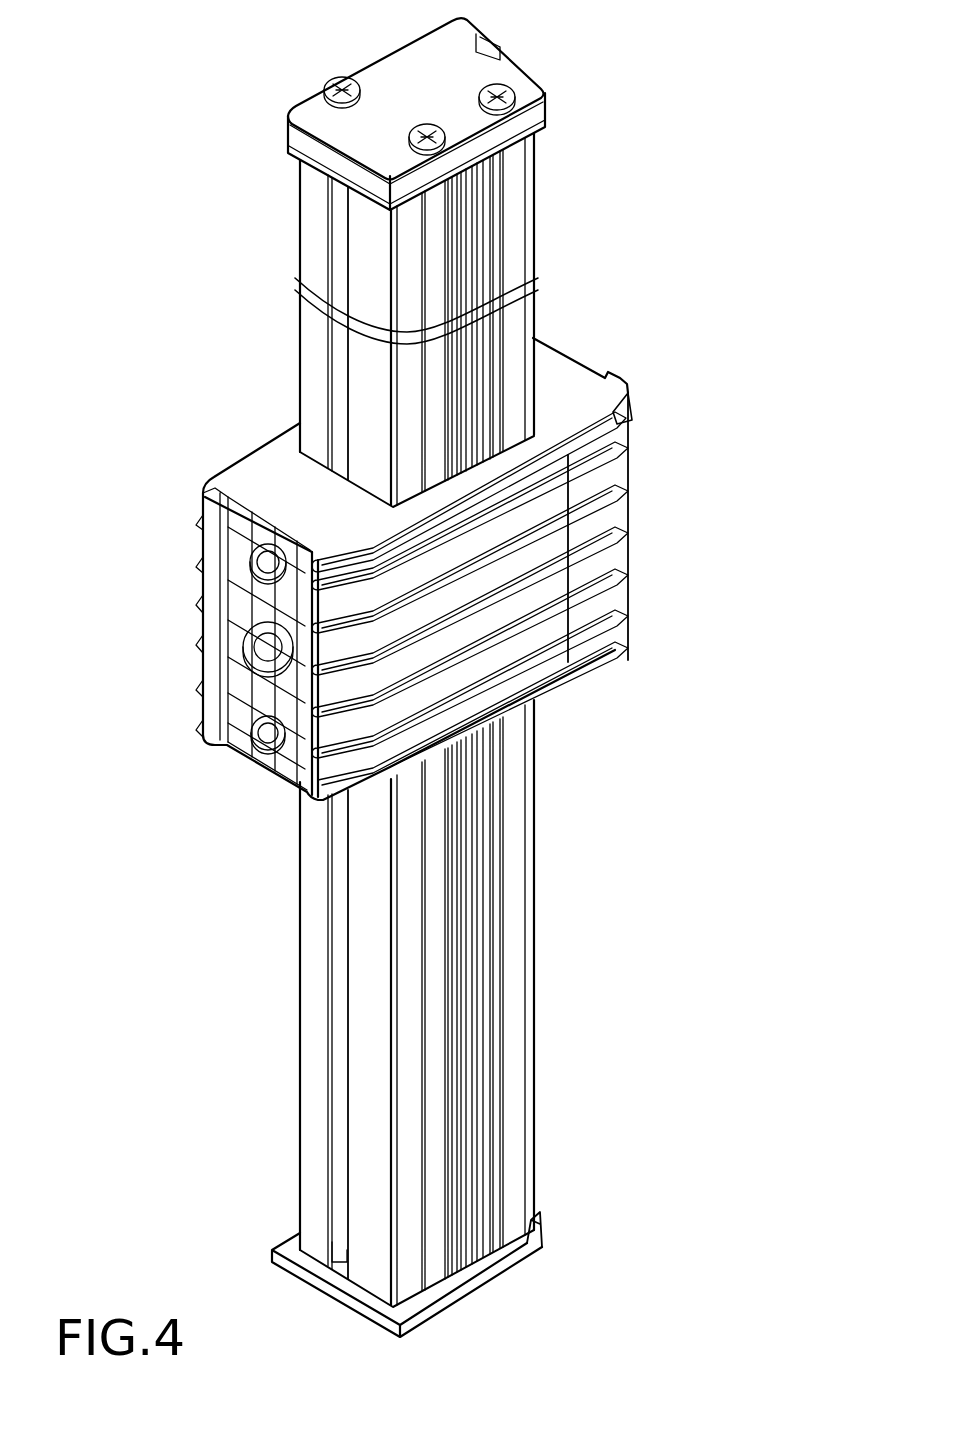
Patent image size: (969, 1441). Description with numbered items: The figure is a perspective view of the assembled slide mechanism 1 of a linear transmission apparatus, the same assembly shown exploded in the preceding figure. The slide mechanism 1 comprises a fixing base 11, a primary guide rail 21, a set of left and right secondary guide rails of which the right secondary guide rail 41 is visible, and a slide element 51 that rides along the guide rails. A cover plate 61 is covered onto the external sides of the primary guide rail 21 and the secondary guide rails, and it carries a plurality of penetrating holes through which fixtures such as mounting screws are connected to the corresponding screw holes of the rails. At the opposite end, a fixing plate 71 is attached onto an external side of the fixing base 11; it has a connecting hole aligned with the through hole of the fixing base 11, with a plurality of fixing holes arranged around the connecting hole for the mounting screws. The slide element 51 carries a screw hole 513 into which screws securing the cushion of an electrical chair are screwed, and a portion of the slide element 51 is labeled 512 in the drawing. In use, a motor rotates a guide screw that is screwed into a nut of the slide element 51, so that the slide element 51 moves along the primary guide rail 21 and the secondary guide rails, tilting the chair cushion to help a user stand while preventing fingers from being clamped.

The slide mechanism 1 is at (690, 32).
The fixing base 11 is at (483, 1262).
The primary guide rail 21 is at (543, 928).
The right secondary guide rail 41 is at (296, 984).
The slide element 51 is at (568, 375).
The locating lug 512 is at (478, 458).
The screw hole 513 is at (245, 648).
The cover plate 61 is at (389, 72).
The fixing plate 71 is at (477, 1288).